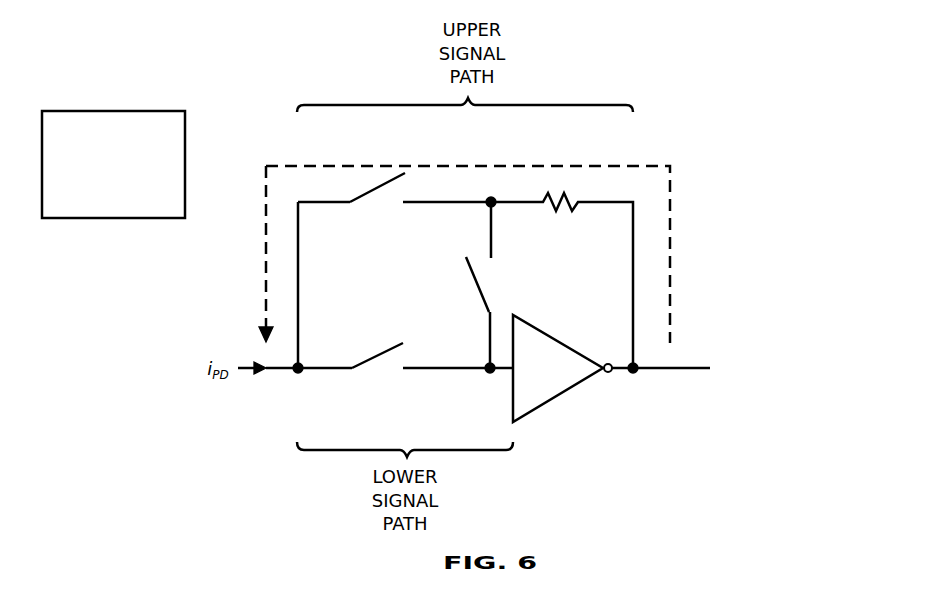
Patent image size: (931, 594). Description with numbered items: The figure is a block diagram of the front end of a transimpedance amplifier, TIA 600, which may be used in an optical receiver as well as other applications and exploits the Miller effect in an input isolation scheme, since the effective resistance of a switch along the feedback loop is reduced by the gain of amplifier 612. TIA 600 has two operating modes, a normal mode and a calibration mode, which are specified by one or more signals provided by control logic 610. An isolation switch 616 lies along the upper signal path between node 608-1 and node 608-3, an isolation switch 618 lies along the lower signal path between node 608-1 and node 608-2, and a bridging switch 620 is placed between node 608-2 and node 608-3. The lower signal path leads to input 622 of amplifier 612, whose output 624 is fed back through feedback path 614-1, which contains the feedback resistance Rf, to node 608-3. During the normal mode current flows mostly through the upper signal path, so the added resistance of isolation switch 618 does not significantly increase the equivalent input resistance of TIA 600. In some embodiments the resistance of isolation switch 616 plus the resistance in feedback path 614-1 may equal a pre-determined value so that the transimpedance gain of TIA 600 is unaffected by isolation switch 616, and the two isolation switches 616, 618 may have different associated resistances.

The transimpedance amplifier (TIA) 600 is at (723, 138).
The control logic 610 is at (356, 227).
The amplifier 612 is at (568, 388).
The feedback path 614-1 is at (670, 250).
The isolation switch 616 is at (363, 191).
The isolation switch 618 is at (362, 363).
The bridging switch 620 is at (480, 292).
The input 622 is at (507, 373).
The output 624 is at (635, 370).
The node 608-1 is at (300, 370).
The node 608-2 is at (488, 366).
The node 608-3 is at (493, 204).